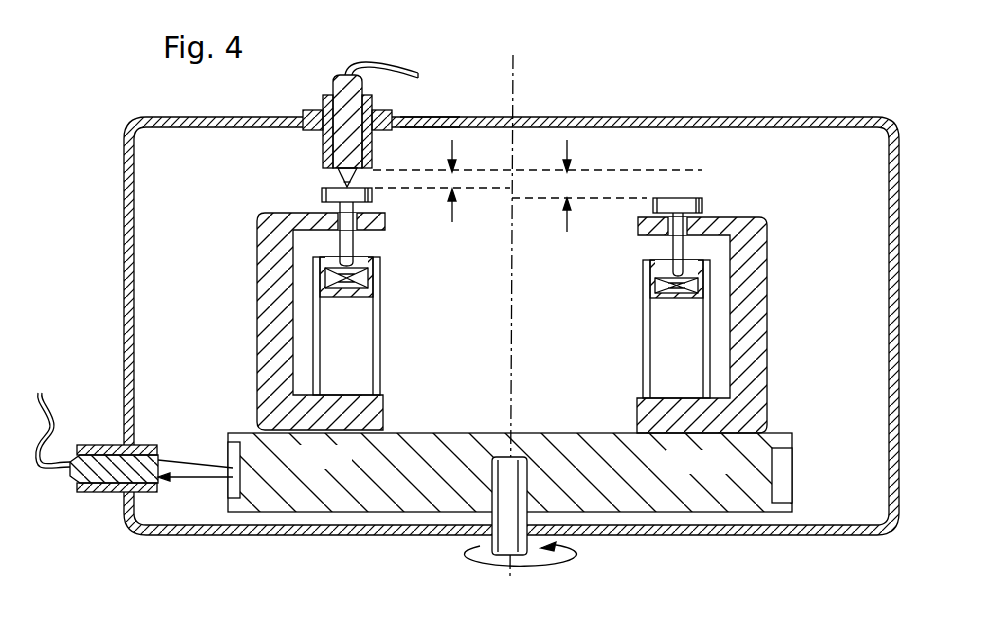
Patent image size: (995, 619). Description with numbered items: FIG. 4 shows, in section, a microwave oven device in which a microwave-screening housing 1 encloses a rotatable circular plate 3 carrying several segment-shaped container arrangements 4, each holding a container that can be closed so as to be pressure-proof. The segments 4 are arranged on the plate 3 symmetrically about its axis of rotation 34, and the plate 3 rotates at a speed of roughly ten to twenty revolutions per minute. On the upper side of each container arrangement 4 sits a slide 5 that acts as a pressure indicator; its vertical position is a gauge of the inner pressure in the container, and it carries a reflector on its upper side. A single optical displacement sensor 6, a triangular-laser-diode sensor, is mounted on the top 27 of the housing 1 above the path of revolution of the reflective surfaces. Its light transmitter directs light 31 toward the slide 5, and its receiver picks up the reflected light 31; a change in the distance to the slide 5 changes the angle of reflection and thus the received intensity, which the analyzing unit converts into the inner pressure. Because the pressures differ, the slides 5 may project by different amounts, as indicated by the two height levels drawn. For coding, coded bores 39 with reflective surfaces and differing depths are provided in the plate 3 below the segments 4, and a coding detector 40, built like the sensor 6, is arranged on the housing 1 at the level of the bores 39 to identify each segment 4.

The microwave-screening housing 1 is at (822, 114).
The top of the microwave housing 27 is at (468, 116).
The axis of rotation 34 is at (528, 87).
The optical displacement sensor 6 is at (352, 156).
The light 31 is at (337, 181).
The slide 5 is at (702, 205).
The container arrangement 4 is at (775, 362).
The plate 3 is at (453, 433).
The coded bores 39 is at (232, 488).
The coding detector 40 is at (103, 493).